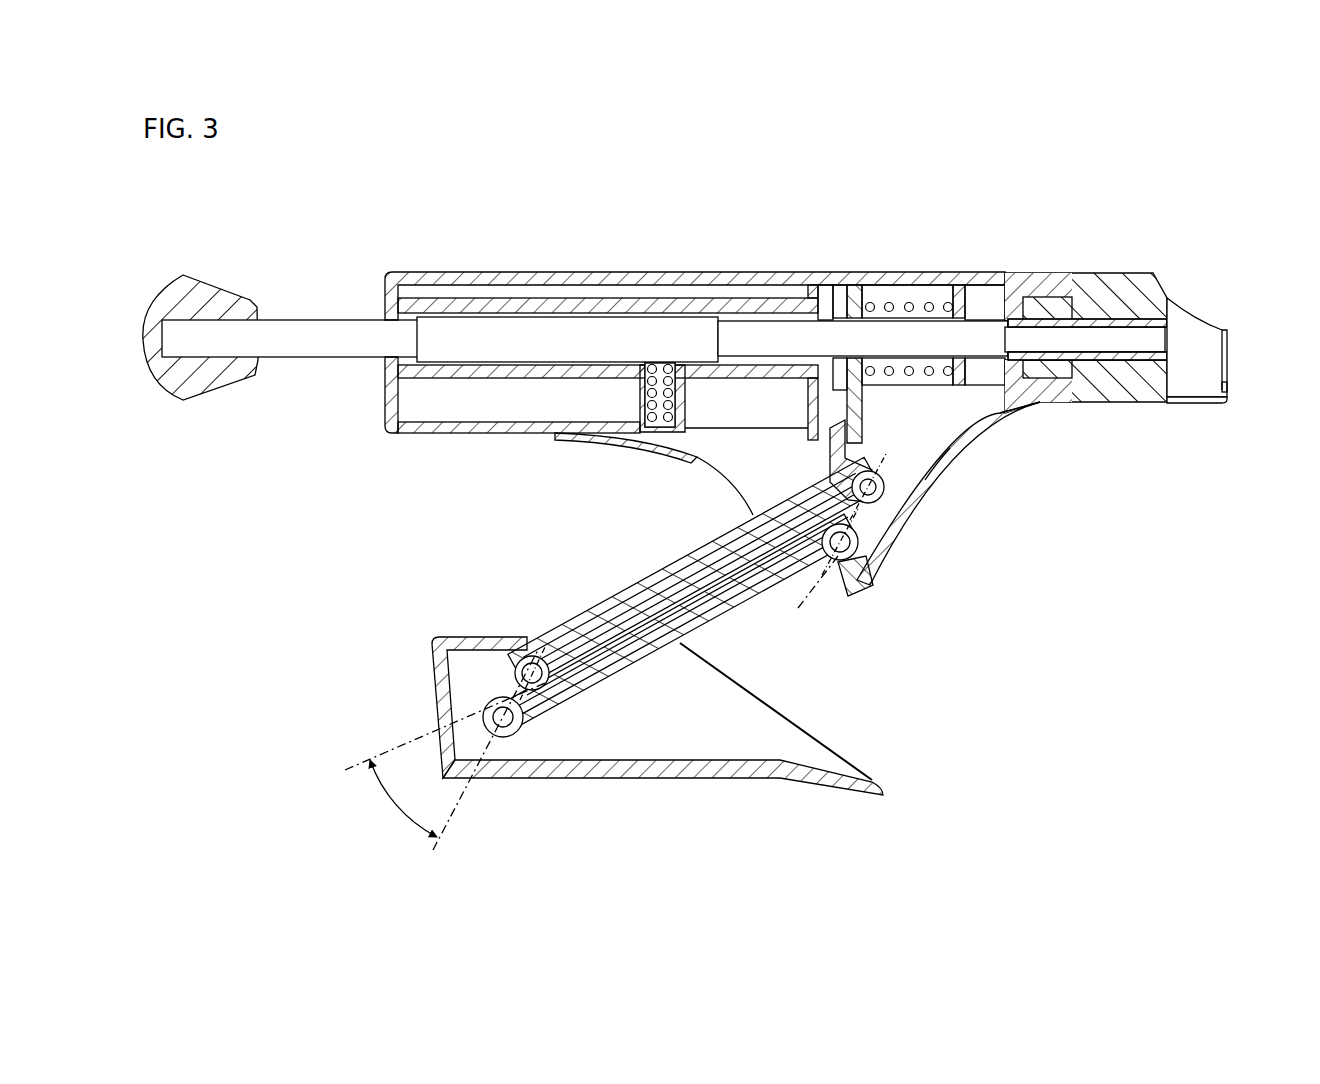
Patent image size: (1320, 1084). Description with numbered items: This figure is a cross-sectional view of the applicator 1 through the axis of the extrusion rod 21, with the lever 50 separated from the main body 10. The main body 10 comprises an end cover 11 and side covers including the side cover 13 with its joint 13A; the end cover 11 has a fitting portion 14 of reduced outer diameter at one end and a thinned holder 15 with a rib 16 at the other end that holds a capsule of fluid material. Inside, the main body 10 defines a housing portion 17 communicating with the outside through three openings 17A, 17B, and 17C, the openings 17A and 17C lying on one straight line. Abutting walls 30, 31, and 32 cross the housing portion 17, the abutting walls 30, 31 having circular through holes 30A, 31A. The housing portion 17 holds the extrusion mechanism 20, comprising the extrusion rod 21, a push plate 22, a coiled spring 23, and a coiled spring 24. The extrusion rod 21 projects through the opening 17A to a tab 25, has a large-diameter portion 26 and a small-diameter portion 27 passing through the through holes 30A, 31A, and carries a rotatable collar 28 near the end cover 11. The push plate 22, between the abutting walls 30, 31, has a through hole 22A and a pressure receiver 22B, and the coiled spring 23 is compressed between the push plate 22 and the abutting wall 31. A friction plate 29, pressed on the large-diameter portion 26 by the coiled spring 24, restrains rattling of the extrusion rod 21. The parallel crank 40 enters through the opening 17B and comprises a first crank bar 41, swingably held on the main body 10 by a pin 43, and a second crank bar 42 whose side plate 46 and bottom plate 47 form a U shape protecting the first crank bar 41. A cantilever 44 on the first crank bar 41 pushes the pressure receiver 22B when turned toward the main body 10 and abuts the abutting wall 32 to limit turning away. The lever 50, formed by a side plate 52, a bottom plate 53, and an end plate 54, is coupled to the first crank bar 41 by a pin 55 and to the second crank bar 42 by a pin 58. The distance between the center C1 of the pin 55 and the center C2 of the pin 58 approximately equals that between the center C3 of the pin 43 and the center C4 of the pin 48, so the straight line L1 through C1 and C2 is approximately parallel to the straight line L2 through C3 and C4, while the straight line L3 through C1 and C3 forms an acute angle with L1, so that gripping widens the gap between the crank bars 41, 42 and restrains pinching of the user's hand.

The applicator 1 is at (702, 520).
The main body 10 is at (590, 268).
The end cover 11 is at (1121, 405).
The side cover 13 is at (452, 410).
The joint 13A is at (482, 437).
The fitting portion 14 is at (1060, 298).
The holder 15 is at (1203, 406).
The rib 16 is at (1230, 390).
The housing portion 17 is at (948, 511).
The opening 17A is at (373, 364).
The opening 17B is at (690, 456).
The opening 17C is at (1180, 327).
The extrusion mechanism 20 is at (939, 398).
The extrusion rod 21 is at (310, 320).
The push plate 22 is at (851, 290).
The through hole 22A is at (866, 316).
The pressure receiver 22B is at (930, 453).
The coiled spring 23 is at (932, 303).
The coiled spring 24 is at (652, 412).
The tab 25 is at (190, 290).
The large-diameter portion 26 is at (676, 318).
The small-diameter portion 27 is at (735, 330).
The collar 28 is at (1112, 316).
The friction plate 29 is at (628, 350).
The abutting wall 30 is at (822, 306).
The through hole 30A is at (805, 295).
The abutting wall 31 is at (960, 300).
The through hole 31A is at (992, 323).
The abutting wall 32 is at (793, 407).
The parallel crank 40 is at (741, 576).
The first crank bar 41 is at (607, 600).
The second crank bar 42 is at (784, 592).
The pin 43 is at (878, 516).
The cantilever 44 is at (822, 447).
The side plate 46 is at (716, 622).
The bottom plate 47 is at (762, 601).
The pin 48 is at (869, 591).
The lever 50 is at (602, 723).
The side plate 52 is at (806, 735).
The bottom plate 53 is at (622, 776).
The end plate 54 is at (430, 672).
The pin 55 is at (521, 660).
The pin 58 is at (502, 738).
The center of pin 55 C1 is at (535, 660).
The center of pin 58 C2 is at (513, 732).
The center of pin 43 C3 is at (886, 495).
The center of pin 48 C4 is at (858, 553).
The straight line L1 is at (456, 838).
The straight line L2 is at (808, 595).
The straight line L3 is at (362, 745).